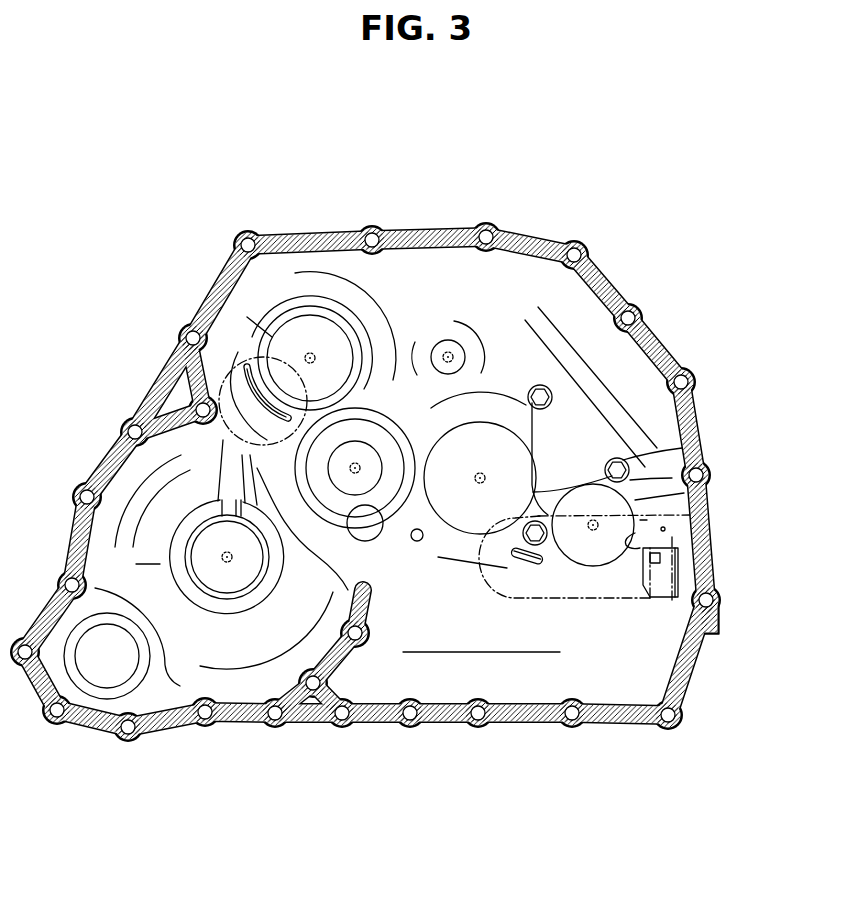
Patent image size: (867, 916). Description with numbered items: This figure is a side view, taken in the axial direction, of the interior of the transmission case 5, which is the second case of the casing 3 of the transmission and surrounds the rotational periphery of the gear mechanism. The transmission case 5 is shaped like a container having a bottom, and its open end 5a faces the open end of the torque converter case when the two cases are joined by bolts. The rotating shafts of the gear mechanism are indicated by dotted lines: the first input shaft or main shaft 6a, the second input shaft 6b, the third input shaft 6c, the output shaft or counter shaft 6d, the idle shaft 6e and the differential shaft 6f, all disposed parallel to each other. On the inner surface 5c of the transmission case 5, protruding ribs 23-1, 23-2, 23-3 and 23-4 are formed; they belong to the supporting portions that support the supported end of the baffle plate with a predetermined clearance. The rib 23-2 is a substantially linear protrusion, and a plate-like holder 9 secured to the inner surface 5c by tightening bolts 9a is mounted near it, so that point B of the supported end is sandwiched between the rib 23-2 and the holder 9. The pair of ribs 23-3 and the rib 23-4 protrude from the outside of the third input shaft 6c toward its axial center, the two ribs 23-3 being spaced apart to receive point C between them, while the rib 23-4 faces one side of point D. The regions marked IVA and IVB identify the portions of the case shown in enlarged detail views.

The casing 3 is at (365, 447).
The transmission case 5 is at (535, 228).
The open end 5a is at (300, 236).
The inner surface 5c is at (250, 290).
The first input shaft 6a is at (481, 472).
The second input shaft 6b is at (310, 352).
The third input shaft 6c is at (630, 497).
The output shaft 6d is at (356, 462).
The idle shaft 6e is at (448, 351).
The differential shaft 6f is at (225, 555).
The holder 9 is at (580, 433).
The bolts 9a is at (545, 392).
The rib 23-1 is at (250, 407).
The rib 23-2 is at (525, 578).
The ribs 23-3 is at (647, 517).
The rib 23-4 is at (668, 574).
The detail view indicator IVA is at (233, 355).
The detail view indicator IVB is at (574, 617).